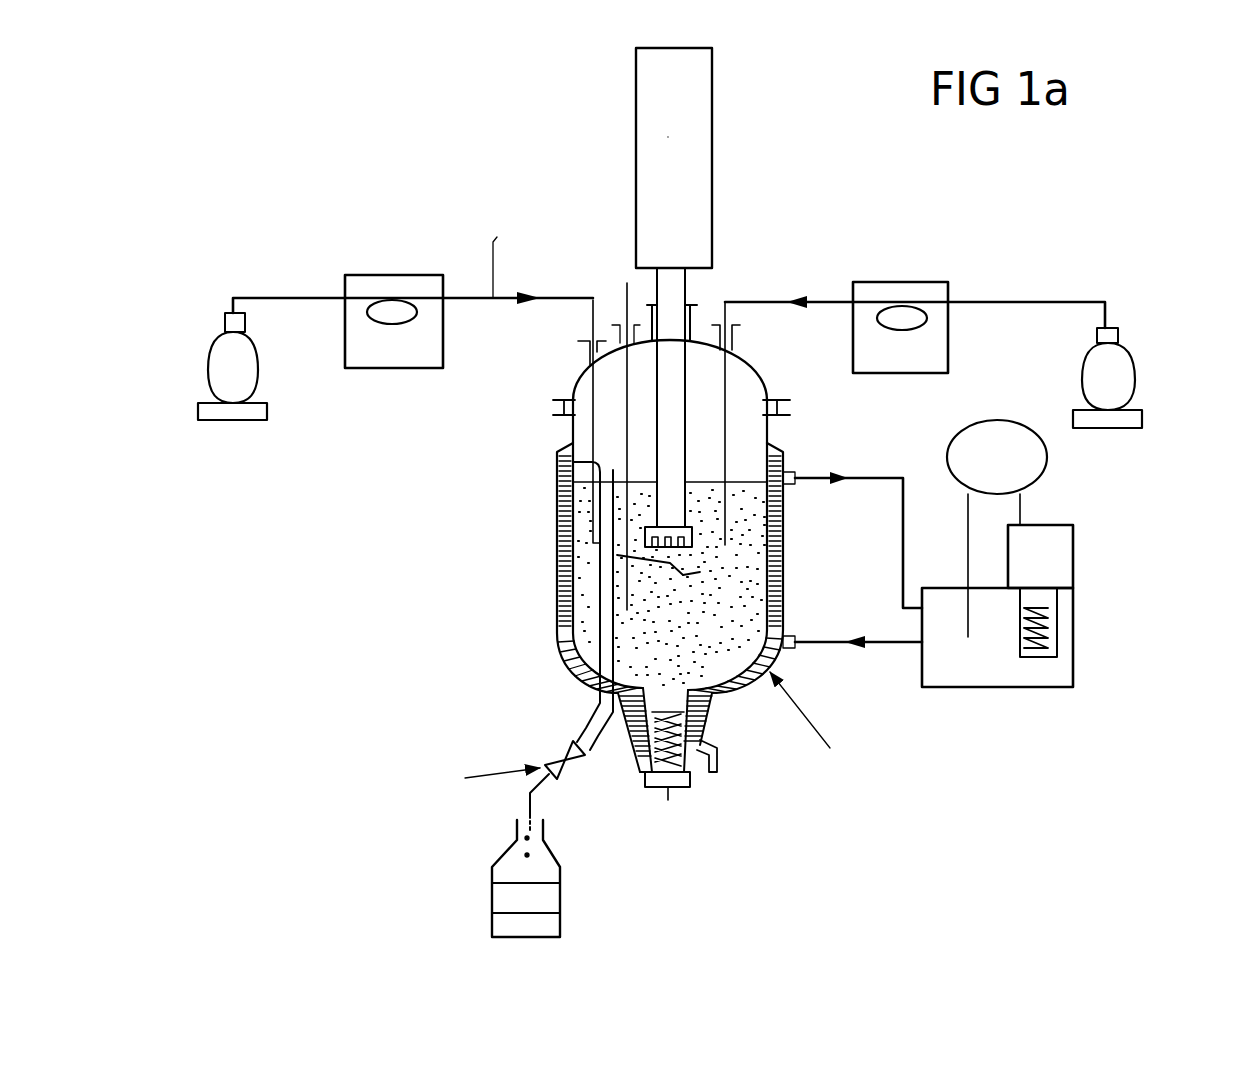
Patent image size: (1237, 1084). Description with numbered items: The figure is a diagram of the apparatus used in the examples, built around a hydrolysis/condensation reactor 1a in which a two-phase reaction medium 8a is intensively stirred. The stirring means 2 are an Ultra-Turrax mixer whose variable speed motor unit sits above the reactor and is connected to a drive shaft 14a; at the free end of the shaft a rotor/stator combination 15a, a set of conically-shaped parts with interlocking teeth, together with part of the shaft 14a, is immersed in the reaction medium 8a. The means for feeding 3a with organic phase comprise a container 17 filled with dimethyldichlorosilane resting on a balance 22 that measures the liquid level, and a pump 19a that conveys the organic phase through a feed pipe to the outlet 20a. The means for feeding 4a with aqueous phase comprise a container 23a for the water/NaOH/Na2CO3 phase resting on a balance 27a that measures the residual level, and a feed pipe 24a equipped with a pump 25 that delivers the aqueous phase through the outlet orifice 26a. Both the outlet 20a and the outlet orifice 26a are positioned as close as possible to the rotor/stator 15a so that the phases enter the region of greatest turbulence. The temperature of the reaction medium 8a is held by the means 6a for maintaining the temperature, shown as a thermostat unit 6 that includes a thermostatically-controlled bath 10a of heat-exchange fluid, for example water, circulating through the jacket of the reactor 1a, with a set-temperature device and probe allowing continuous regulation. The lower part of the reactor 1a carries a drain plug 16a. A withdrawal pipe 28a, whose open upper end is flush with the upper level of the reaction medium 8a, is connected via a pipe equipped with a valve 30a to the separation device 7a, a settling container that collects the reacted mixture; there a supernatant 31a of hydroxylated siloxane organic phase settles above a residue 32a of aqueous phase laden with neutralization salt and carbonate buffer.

The motor / temperature probe tube 2 is at (633, 93).
The means for feeding with organic phase 3a is at (668, 137).
The drive shaft 14a is at (677, 302).
The hydrolysis/condensation reactor 1a is at (1013, 468).
The rotor/stator combination 15a is at (652, 530).
The outlet of the organic phase feed pipe 20a is at (670, 563).
The outlet orifice of the aqueous phase feed pipe 26a is at (683, 572).
The means for maintaining the temperature 6a is at (790, 583).
The thermostat unit 6 is at (1078, 596).
The thermostatically-controlled bath 10a is at (1060, 662).
The gas bottle 17 is at (208, 355).
The bottle stand 22 is at (228, 420).
The pump 19a is at (380, 275).
The container for the aqueous phase 23a is at (1135, 375).
The balance 27a is at (1110, 420).
The feed pipe for aqueous phase 24a is at (1028, 302).
The flow controller 25 is at (880, 282).
The means for feeding with aqueous phase 4a is at (925, 278).
The withdrawal pipe 28a is at (600, 696).
The valve 30a is at (565, 750).
The reaction medium 8a is at (652, 660).
The drain plug 16a is at (668, 800).
The collection bottle 31a is at (560, 905).
The device for organic phase/aqueous phase separation 7a is at (492, 872).
The collected liquid 32a is at (510, 922).